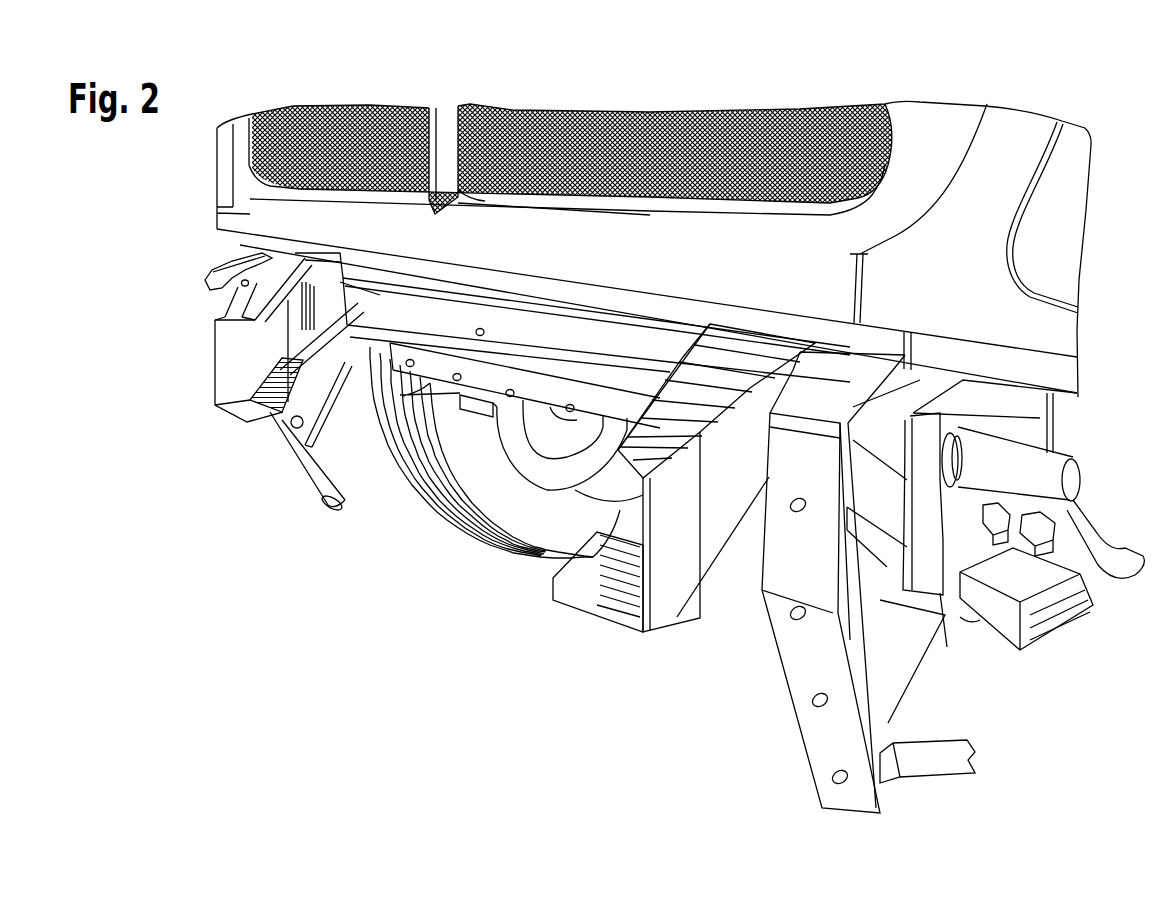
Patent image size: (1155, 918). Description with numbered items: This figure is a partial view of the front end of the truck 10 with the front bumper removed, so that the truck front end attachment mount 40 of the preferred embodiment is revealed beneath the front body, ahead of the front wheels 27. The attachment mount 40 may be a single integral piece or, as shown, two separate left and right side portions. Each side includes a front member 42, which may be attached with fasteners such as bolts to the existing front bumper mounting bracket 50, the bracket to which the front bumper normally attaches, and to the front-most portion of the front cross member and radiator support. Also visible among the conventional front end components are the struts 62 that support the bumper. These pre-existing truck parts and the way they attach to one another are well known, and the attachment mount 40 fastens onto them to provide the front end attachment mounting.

The truck 10 is at (912, 85).
The front wheels 27 is at (470, 549).
The truck front end attachment mount 40 is at (237, 474).
The front member 42 is at (230, 432).
The front bumper mounting bracket 50 is at (302, 497).
The struts 62 is at (335, 425).